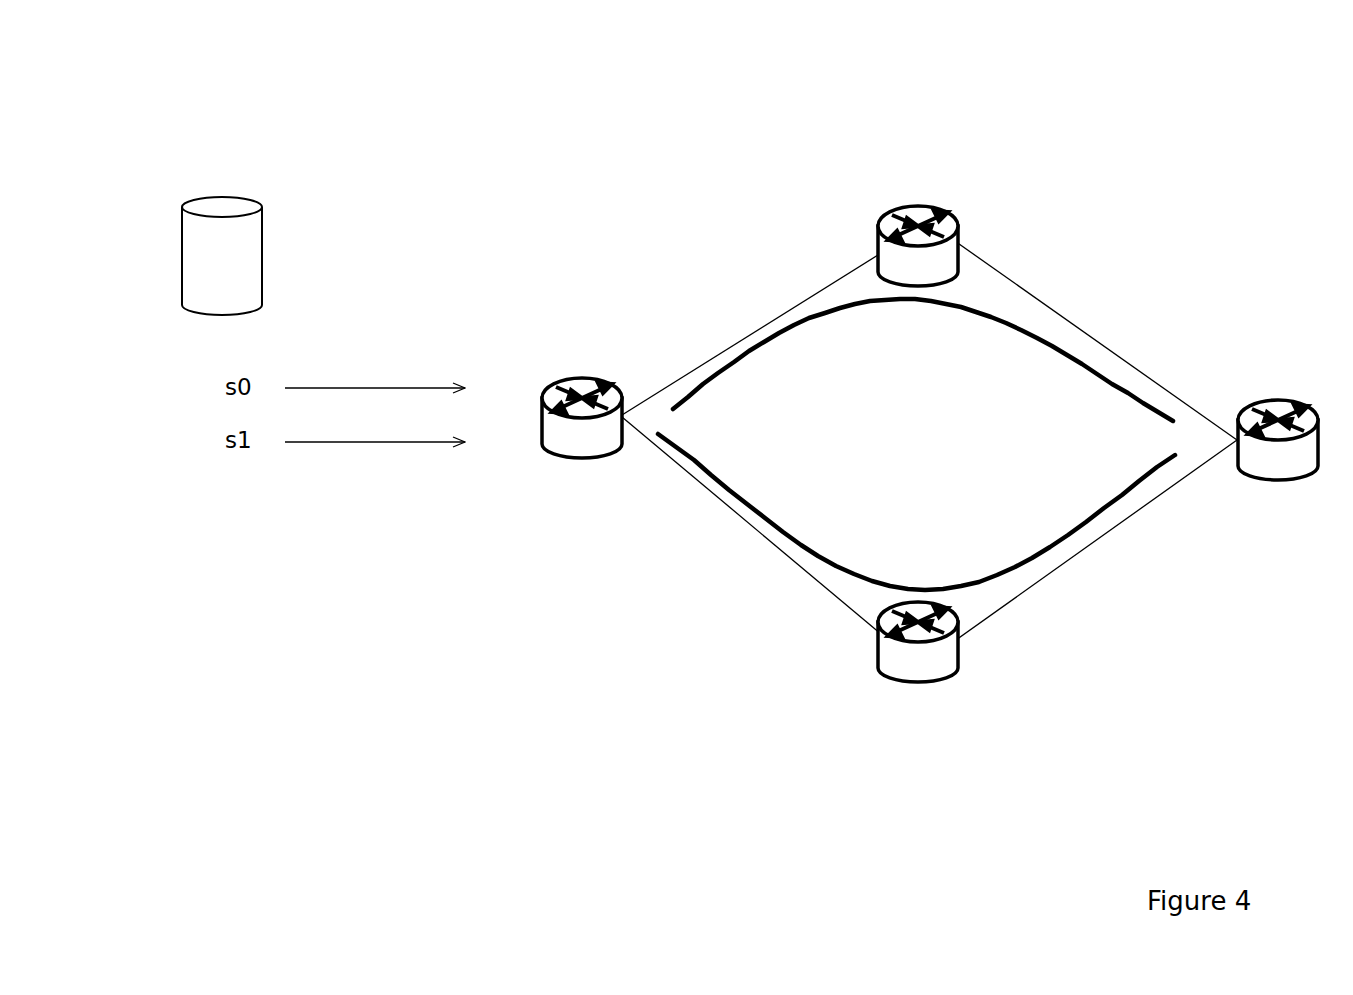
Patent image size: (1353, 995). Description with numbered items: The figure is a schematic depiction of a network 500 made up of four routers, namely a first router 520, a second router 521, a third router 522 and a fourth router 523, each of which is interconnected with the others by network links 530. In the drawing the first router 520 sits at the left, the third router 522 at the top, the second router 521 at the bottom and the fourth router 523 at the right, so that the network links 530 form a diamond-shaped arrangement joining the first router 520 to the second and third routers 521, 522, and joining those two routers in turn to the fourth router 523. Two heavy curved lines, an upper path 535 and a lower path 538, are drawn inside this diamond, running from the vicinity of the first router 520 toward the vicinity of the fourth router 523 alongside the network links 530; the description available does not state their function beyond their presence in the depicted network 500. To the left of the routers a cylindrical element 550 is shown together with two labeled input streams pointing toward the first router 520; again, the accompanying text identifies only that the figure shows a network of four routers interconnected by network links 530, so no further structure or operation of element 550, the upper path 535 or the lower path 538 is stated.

The network system 500 is at (427, 142).
The ingress router 520 is at (578, 459).
The lower intermediate router 521 is at (917, 683).
The upper intermediate router 522 is at (958, 212).
The egress router 523 is at (1277, 482).
The network links 530 is at (1193, 478).
The upper multicast tree path 535 is at (817, 315).
The lower multicast tree path 538 is at (816, 570).
The source data store 550 is at (208, 245).